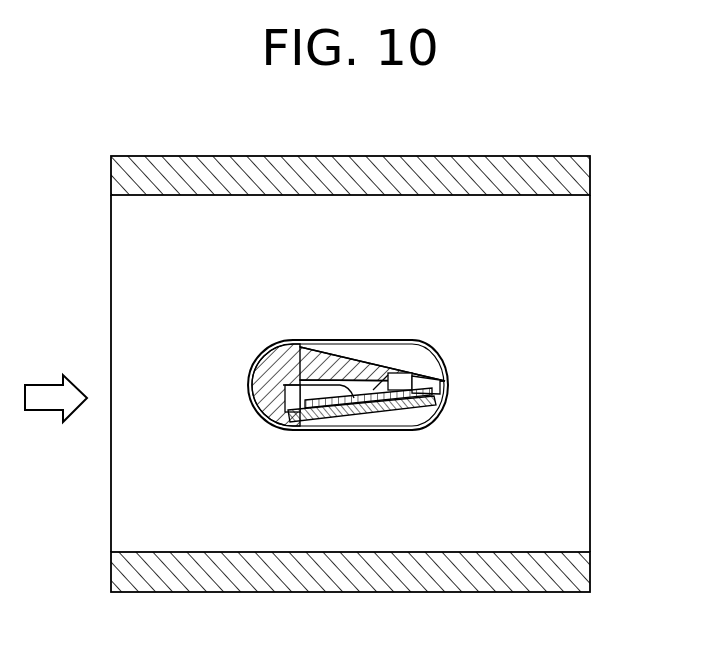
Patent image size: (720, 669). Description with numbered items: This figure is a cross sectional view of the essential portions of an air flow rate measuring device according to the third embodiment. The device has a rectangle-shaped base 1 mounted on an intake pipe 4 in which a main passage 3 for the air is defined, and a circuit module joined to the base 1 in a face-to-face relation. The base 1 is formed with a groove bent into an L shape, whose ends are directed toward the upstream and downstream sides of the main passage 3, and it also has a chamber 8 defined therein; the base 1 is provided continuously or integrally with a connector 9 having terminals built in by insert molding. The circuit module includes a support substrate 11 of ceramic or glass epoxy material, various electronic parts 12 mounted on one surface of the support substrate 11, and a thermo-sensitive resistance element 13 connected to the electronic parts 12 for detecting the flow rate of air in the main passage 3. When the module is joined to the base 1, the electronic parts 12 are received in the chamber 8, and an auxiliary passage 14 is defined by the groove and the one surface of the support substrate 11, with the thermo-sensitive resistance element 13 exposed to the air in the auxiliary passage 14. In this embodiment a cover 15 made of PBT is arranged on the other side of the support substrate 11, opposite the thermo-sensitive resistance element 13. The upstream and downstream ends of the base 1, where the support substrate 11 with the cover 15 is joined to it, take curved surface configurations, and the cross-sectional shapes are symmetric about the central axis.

The base 1 is at (280, 367).
The main passage 3 is at (557, 197).
The intake pipe 4 is at (538, 157).
The chamber 8 is at (348, 385).
The connector 9 is at (430, 345).
The support substrate 11 is at (436, 411).
The electronic parts 12 is at (262, 408).
The thermo-sensitive resistance element 13 is at (408, 374).
The auxiliary passage 14 is at (425, 382).
The cover 15 is at (364, 413).